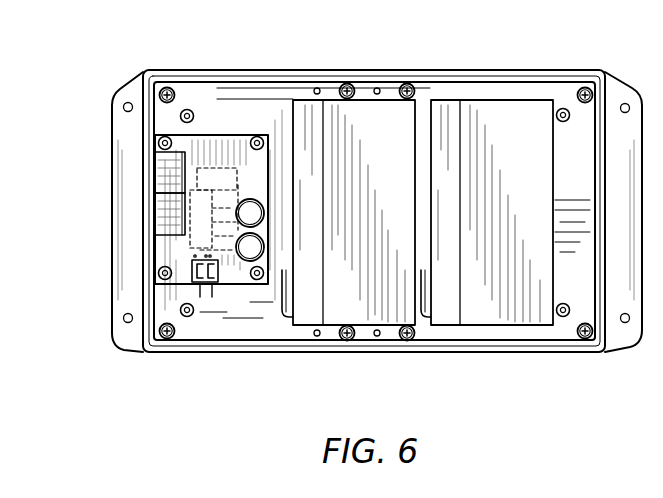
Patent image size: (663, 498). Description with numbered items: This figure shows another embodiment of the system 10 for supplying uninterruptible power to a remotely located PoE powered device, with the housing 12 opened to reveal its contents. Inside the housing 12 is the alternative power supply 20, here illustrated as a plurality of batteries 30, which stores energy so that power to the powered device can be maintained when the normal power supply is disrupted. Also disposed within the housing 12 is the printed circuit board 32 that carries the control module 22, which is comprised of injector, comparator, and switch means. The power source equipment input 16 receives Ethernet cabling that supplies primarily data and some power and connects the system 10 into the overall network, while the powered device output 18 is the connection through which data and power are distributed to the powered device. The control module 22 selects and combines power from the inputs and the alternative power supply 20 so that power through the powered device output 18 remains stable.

The system 10 is at (118, 58).
The housing 12 is at (243, 70).
The power source equipment input 16 is at (153, 217).
The powered device output 18 is at (153, 174).
The alternative power supply 20 is at (377, 103).
The control module 22 is at (223, 284).
The battery 30 is at (377, 320).
The printed circuit board 32 is at (160, 138).